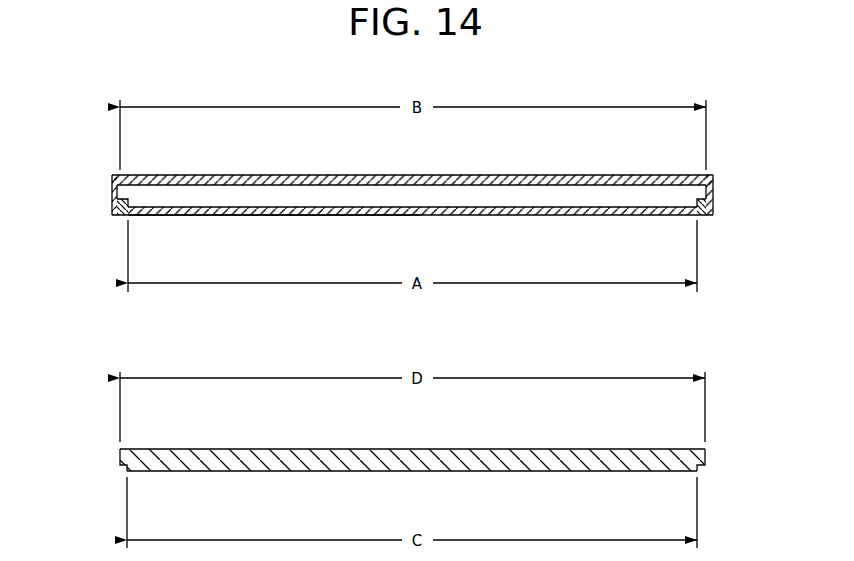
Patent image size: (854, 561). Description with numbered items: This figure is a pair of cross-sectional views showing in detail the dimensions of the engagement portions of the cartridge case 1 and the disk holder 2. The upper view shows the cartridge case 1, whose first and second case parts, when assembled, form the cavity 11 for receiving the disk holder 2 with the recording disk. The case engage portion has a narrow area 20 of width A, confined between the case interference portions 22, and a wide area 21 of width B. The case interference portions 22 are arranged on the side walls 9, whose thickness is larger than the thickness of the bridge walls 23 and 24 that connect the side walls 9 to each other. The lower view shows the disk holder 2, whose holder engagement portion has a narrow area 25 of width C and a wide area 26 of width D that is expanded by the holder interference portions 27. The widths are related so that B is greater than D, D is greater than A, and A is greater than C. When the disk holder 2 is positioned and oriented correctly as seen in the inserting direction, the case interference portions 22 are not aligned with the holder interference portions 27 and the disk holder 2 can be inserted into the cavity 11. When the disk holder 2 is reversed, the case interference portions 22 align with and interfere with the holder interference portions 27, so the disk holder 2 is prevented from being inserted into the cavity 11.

The cartridge case 1 is at (714, 180).
The disk holder 2 is at (633, 465).
The side walls 9 is at (112, 204).
The cavity 11 is at (652, 215).
The narrow area 20 is at (228, 215).
The wide area 21 is at (195, 184).
The case interference portions 22 is at (119, 216).
The bridge wall 23 is at (540, 184).
The bridge wall 24 is at (516, 214).
The narrow area 25 is at (510, 466).
The wide area 26 is at (552, 457).
The holder interference portions 27 is at (120, 458).